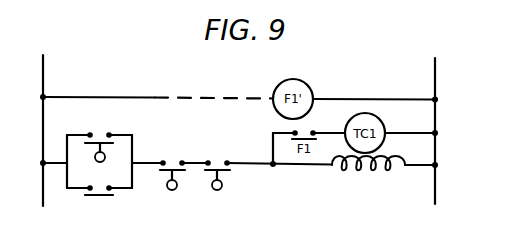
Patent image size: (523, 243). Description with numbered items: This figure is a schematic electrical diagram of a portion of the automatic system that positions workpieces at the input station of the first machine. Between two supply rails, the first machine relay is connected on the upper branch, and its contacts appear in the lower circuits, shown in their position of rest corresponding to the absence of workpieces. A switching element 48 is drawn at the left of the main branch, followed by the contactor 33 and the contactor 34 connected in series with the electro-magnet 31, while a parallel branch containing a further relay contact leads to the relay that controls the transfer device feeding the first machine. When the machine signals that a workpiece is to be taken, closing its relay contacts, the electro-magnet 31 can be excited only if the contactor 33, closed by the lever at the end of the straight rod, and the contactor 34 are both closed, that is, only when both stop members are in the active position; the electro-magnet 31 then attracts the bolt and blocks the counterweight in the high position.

The reset push-button switch 48 is at (100, 143).
The contactor 33 is at (173, 190).
The contactor 34 is at (216, 190).
The electro-magnet 31 is at (378, 170).